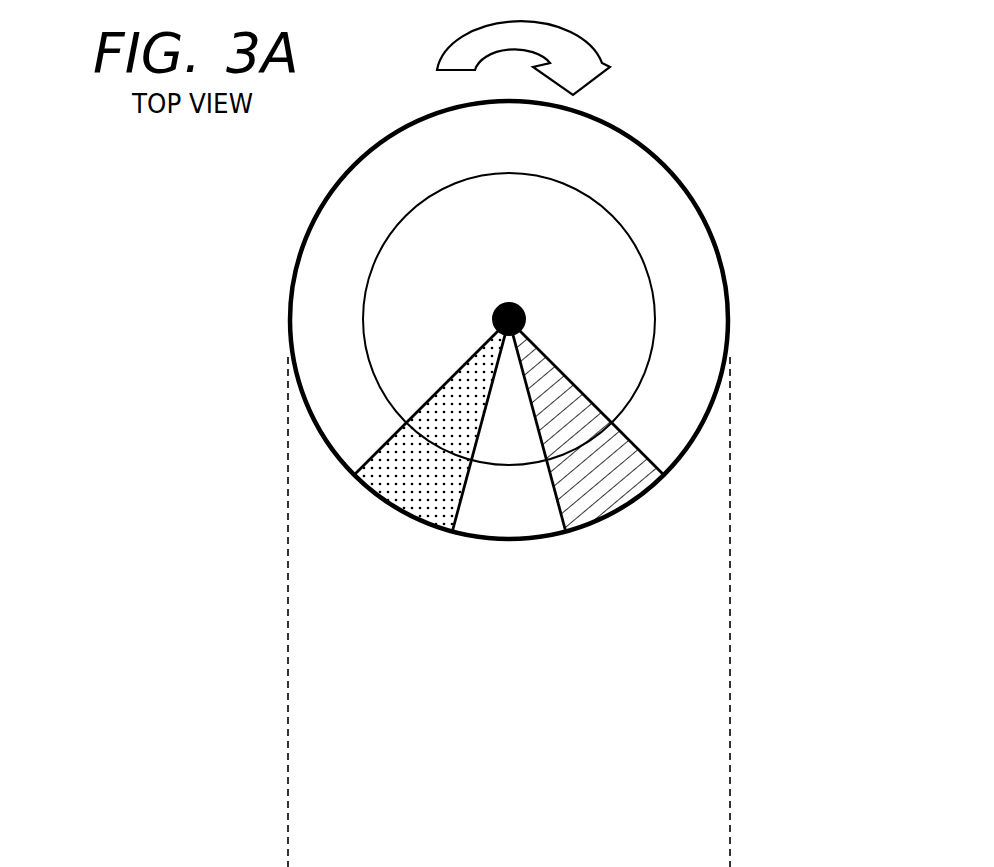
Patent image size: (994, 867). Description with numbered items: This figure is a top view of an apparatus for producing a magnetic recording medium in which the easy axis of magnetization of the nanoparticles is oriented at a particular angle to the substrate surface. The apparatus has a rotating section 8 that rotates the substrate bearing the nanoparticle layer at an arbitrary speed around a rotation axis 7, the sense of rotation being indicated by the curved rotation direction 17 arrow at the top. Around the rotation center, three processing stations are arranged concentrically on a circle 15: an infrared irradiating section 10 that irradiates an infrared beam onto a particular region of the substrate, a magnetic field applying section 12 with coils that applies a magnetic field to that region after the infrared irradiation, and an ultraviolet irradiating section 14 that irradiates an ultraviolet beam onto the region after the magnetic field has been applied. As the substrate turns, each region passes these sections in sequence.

The rotation direction 17 is at (582, 35).
The rotating section 8 is at (297, 258).
The rotation axis 7 is at (520, 306).
The circle 15 is at (655, 313).
The ultraviolet irradiating section 14 is at (407, 493).
The magnetic field applying section 12 is at (511, 502).
The infrared irradiating section 10 is at (623, 503).